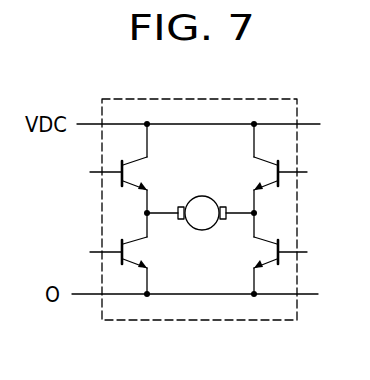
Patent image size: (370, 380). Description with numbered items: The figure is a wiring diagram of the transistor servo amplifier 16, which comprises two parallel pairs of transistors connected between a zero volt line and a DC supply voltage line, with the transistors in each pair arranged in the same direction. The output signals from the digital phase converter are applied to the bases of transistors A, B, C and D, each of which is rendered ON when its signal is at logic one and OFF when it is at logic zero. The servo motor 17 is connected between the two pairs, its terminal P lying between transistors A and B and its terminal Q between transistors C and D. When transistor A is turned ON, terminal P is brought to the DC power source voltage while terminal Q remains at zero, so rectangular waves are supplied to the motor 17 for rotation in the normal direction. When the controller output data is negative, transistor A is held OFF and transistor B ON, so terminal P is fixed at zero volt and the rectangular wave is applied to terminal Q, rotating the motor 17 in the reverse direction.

The transistor servo amplifier 16 is at (275, 97).
The servo motor 17 is at (207, 233).
The transistor A is at (128, 173).
The transistor B is at (128, 253).
The transistor C is at (272, 173).
The transistor D is at (272, 253).
The terminal P is at (178, 221).
The terminal Q is at (226, 218).